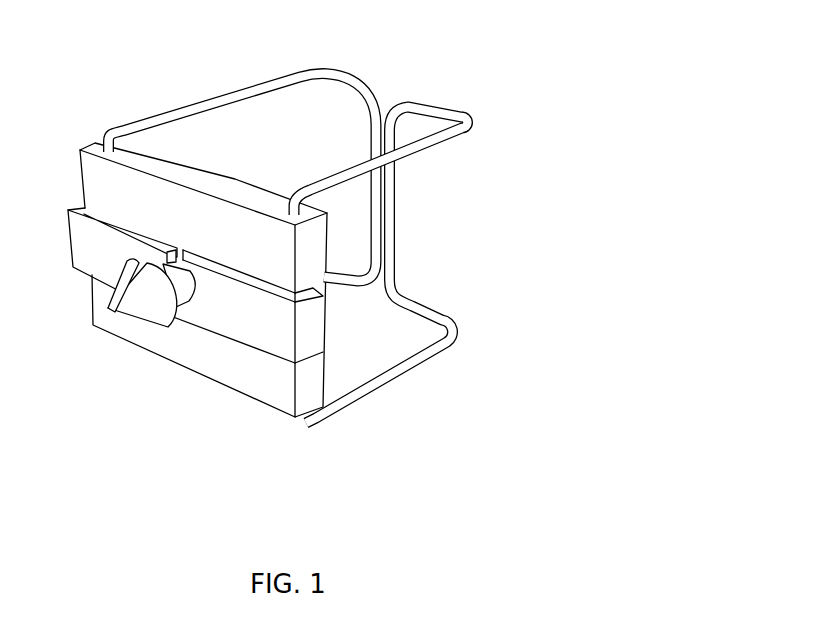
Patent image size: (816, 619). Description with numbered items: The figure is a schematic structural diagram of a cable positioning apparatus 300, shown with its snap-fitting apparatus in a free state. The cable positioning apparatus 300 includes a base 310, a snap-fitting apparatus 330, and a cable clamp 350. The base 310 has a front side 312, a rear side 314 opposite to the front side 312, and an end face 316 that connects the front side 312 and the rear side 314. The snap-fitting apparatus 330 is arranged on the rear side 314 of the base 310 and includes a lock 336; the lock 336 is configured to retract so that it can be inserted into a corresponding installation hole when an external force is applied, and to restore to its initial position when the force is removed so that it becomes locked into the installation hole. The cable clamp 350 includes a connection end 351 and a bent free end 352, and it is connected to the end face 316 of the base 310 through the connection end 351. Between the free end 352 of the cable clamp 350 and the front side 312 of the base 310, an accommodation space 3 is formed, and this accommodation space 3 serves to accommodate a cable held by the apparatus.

The cable positioning apparatus 300 is at (288, 271).
The accommodation space 3 is at (337, 142).
The base 310 is at (242, 400).
The front side 312 is at (229, 177).
The rear side 314 is at (280, 387).
The end face 316 is at (145, 170).
The snap-fitting apparatus 330 is at (88, 240).
The lock 336 is at (153, 295).
The cable clamp 350 is at (235, 81).
The connection end 351 is at (300, 197).
The free end 352 is at (437, 113).